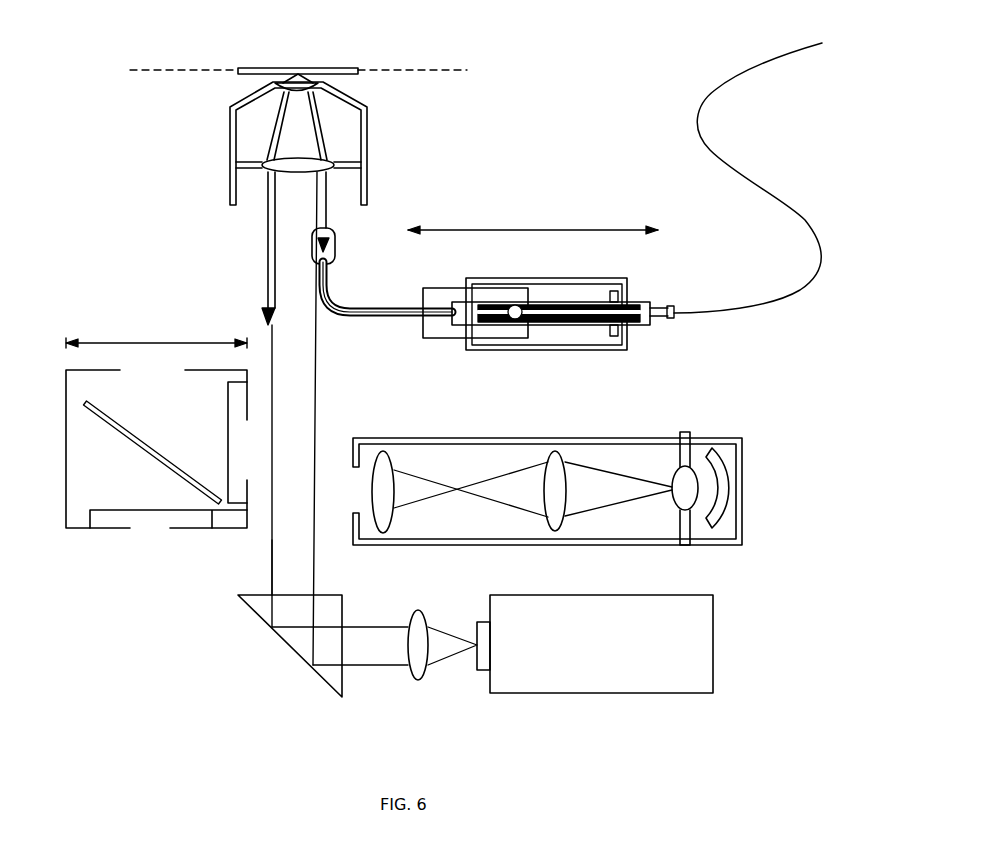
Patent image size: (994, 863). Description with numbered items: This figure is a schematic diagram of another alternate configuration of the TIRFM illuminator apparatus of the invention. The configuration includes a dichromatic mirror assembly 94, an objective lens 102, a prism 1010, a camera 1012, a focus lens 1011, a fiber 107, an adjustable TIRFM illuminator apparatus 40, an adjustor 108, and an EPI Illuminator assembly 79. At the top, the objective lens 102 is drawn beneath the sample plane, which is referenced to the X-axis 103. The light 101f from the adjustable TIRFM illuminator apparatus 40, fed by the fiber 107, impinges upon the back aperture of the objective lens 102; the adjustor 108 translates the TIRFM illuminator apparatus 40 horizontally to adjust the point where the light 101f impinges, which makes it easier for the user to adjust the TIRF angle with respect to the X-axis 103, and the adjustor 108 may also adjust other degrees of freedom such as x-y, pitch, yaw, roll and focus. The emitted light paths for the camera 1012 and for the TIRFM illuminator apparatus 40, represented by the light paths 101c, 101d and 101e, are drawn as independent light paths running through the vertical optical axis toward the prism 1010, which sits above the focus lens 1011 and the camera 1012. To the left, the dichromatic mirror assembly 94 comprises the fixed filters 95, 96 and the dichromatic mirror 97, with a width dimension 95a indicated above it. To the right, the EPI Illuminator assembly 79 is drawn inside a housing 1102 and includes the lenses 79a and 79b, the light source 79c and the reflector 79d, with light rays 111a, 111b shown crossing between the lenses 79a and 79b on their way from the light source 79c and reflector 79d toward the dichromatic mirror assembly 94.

The X-axis 103 is at (394, 70).
The objective lens 102 is at (216, 128).
The emitted light path 101e is at (266, 250).
The light 101f is at (328, 212).
The emitted light path 101d is at (318, 342).
The emitted light path 101c is at (272, 555).
The fiber 107 is at (765, 309).
The adjustable TIRFM illuminator apparatus 40 is at (662, 268).
The adjustor 108 is at (531, 230).
The beam splitter housing width 95a is at (108, 338).
The dichromatic mirror assembly 94 is at (132, 470).
The dichromatic mirror 97 is at (130, 432).
The fixed filter 96 is at (227, 404).
The fixed filter 95 is at (140, 512).
The EPI Illuminator assembly 79 is at (592, 479).
The detector housing 1102 is at (750, 449).
The lens 79a is at (385, 447).
The lens 79b is at (558, 450).
The light source 79c is at (683, 432).
The reflector 79d is at (735, 488).
The light ray 111a is at (430, 480).
The light ray 111b is at (485, 500).
The prism 1010 is at (320, 678).
The focus lens 1011 is at (418, 680).
The camera 1012 is at (617, 695).